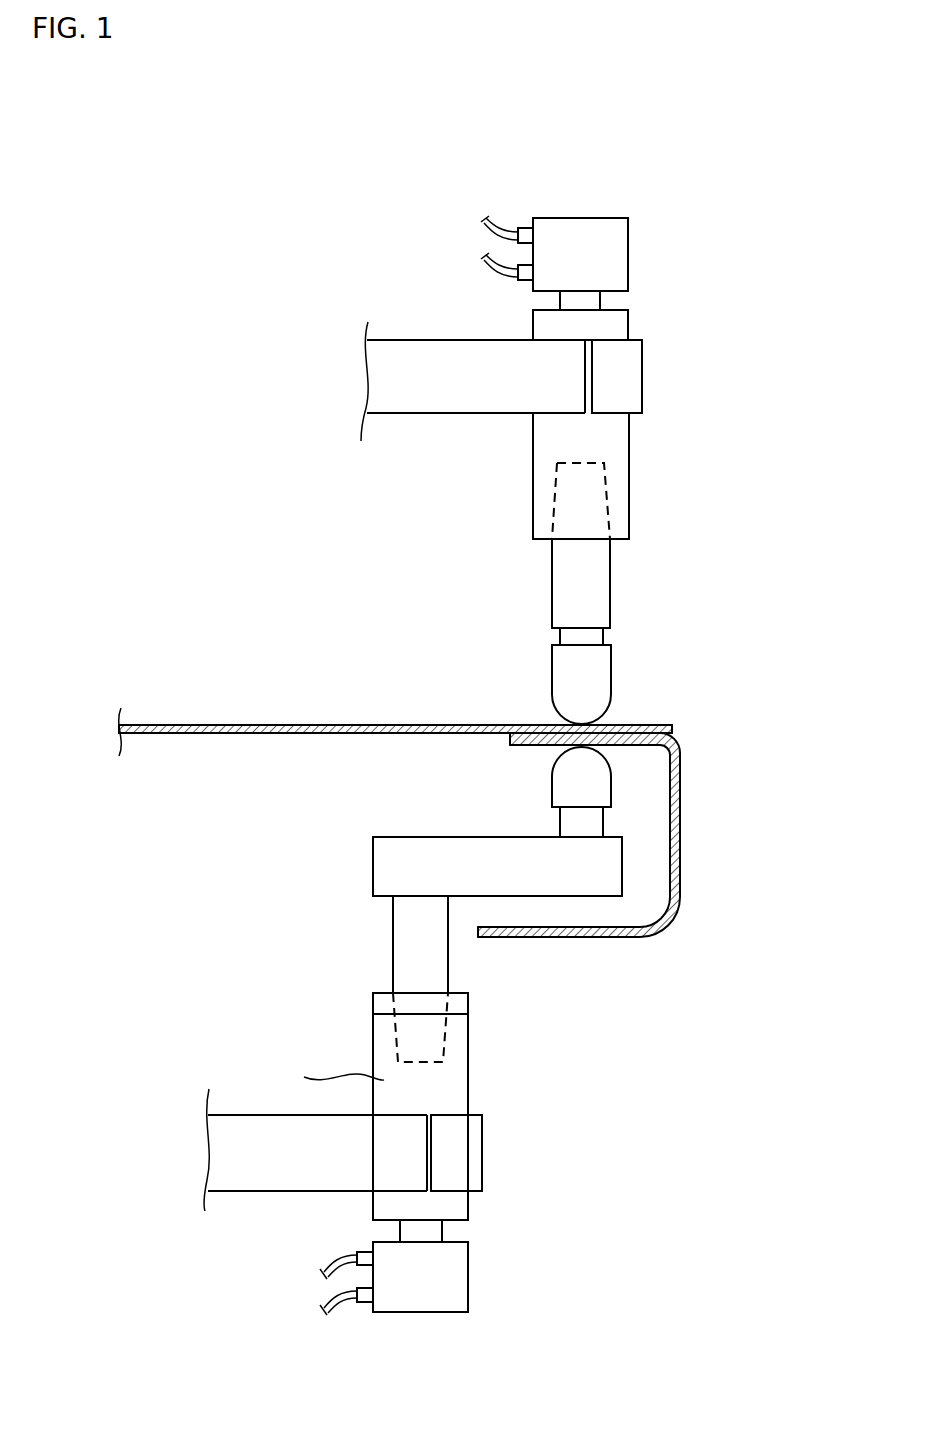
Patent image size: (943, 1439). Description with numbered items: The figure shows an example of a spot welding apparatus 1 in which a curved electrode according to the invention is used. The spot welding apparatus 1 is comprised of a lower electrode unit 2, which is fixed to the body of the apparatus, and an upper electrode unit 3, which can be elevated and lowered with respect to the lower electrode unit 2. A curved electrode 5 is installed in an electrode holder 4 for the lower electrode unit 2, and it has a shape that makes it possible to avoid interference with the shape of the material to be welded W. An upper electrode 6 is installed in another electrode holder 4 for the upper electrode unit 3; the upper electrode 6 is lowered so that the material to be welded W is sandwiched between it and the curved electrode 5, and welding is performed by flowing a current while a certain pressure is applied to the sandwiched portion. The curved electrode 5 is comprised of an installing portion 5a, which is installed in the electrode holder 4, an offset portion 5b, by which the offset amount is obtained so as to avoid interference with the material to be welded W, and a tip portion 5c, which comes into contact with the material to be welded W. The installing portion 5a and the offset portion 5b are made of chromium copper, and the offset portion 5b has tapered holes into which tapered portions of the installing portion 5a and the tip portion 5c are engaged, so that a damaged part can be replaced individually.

The spot welding apparatus 1 is at (731, 352).
The lower electrode unit 2 is at (496, 1020).
The upper electrode unit 3 is at (680, 498).
The electrode holder 4 is at (542, 478).
The curved electrode 5 is at (375, 830).
The installing portion 5a is at (398, 940).
The offset portion 5b is at (469, 852).
The tip portion 5c is at (590, 784).
The upper electrode 6 is at (592, 670).
The material to be welded W is at (268, 725).